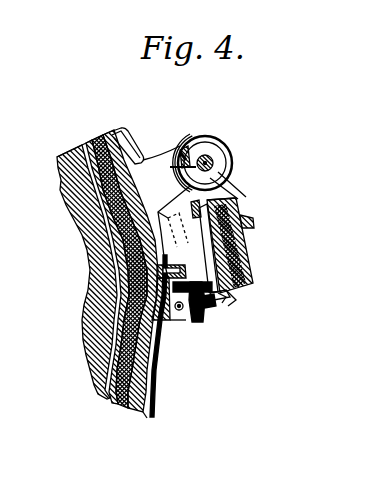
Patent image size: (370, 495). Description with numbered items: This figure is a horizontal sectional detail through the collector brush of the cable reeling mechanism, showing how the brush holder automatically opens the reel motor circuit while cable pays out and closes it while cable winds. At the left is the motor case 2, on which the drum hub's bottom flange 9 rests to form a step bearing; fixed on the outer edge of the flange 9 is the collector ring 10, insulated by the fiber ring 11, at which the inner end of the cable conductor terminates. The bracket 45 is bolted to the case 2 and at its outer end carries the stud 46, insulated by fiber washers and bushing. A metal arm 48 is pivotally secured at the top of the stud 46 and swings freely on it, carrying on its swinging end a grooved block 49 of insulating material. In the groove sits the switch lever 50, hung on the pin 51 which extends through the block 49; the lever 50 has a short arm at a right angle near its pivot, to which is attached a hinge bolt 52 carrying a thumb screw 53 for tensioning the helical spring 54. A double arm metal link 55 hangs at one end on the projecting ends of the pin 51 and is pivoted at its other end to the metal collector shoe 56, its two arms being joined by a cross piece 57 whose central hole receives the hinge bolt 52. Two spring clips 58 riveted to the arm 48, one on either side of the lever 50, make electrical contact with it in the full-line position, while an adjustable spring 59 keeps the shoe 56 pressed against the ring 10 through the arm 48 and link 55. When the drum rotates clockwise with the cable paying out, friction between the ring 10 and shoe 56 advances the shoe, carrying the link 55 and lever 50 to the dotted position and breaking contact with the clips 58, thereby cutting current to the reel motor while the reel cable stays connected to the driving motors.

The case 2 is at (93, 373).
The bottom flange 9 is at (113, 399).
The collector ring 10 is at (130, 409).
The fiber ring 11 is at (120, 408).
The bracket 45 is at (158, 170).
The stud 46 is at (203, 160).
The metal arm 48 is at (218, 170).
The grooved block 49 is at (226, 292).
The switch lever 50 is at (198, 192).
The pin 51 is at (225, 297).
The hinge bolt 52 is at (198, 320).
The thumb screw 53 is at (207, 308).
The helical spring 54 is at (214, 310).
The double arm metal link 55 is at (187, 287).
The collector shoe 56 is at (175, 268).
The cross piece 57 is at (190, 300).
The spring clips 58 is at (196, 209).
The adjustable spring 59 is at (234, 203).